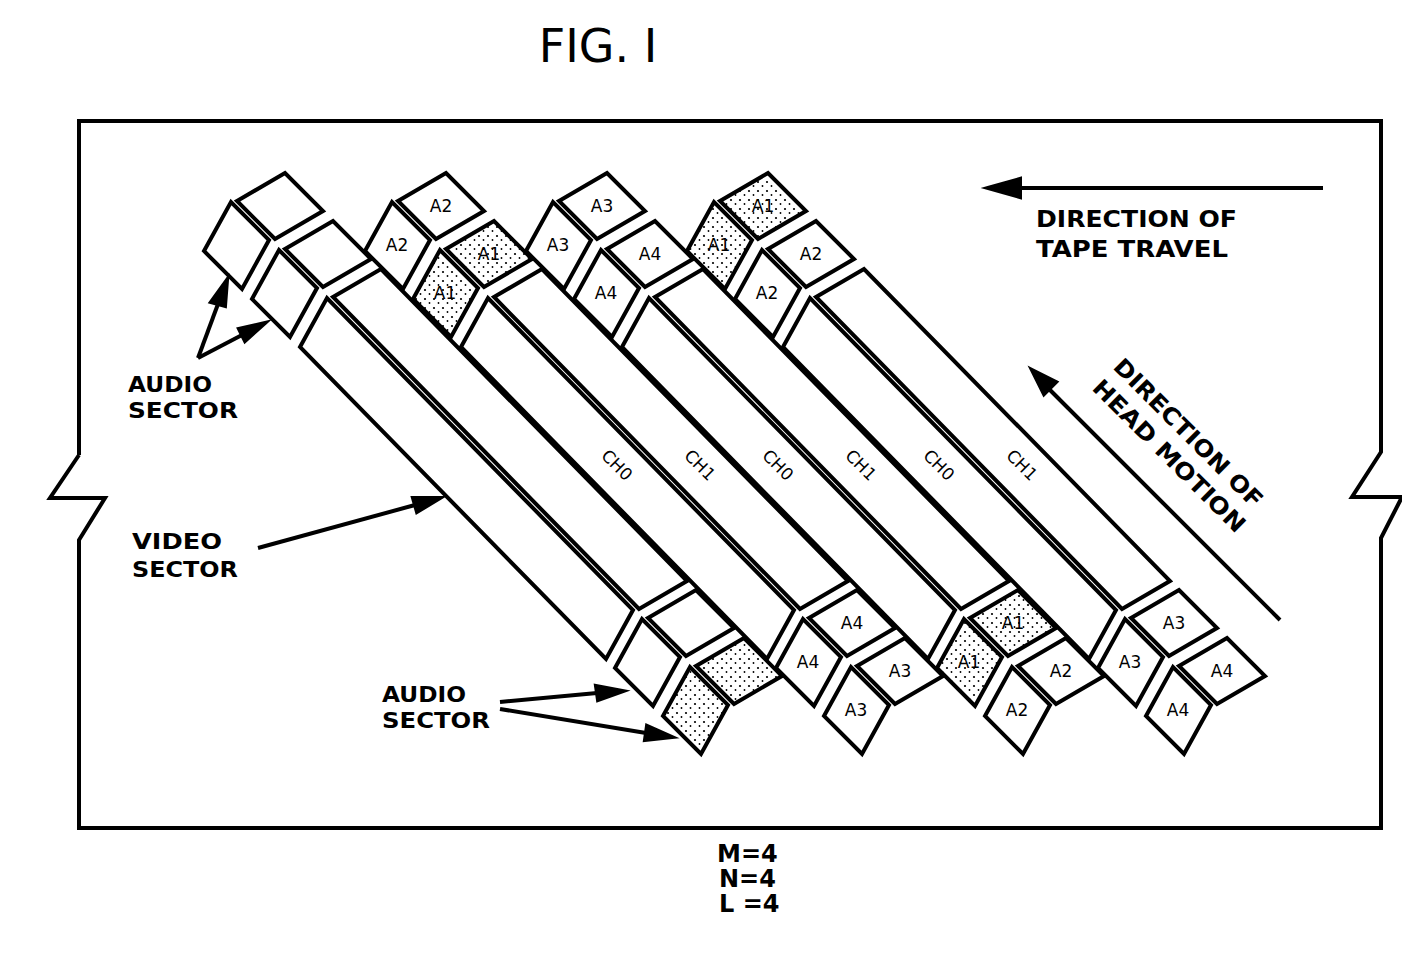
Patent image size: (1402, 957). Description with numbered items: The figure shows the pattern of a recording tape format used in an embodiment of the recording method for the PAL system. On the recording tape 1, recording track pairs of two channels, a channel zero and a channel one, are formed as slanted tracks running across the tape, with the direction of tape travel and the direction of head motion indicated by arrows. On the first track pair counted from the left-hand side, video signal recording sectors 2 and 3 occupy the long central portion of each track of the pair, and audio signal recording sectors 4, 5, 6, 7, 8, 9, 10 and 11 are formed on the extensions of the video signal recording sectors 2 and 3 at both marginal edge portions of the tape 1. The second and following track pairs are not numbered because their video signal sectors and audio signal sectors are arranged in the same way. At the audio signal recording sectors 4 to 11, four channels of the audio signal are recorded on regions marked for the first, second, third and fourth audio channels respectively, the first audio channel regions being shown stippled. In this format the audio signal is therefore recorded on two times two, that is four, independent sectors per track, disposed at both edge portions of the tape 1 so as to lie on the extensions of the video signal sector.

The recording tape 1 is at (1332, 153).
The video signal recording sector 2 is at (353, 375).
The video signal recording sector 3 is at (442, 368).
The audio signal recording sector 4 is at (702, 735).
The audio signal recording sector 5 is at (747, 678).
The audio signal recording sector 6 is at (642, 683).
The audio signal recording sector 7 is at (642, 628).
The audio signal recording sector 8 is at (283, 310).
The audio signal recording sector 9 is at (323, 237).
The audio signal recording sector 10 is at (233, 227).
The audio signal recording sector 11 is at (273, 188).